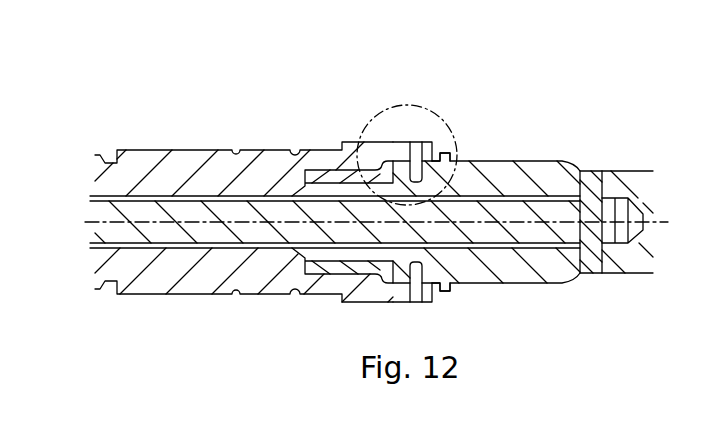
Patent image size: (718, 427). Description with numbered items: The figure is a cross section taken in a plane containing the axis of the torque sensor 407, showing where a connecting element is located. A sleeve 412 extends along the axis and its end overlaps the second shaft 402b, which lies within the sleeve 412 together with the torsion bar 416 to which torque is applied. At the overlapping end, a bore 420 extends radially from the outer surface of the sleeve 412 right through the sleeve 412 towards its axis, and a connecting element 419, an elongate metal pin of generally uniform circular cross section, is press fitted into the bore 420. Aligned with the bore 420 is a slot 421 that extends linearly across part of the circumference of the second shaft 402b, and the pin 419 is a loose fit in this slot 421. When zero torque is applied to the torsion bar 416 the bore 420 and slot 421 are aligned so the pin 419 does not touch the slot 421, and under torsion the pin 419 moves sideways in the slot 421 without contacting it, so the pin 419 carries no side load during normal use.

The torque sensor 407 is at (125, 141).
The sleeve 412 is at (262, 163).
The torsion bar 416 is at (223, 226).
The second shaft 402b is at (503, 270).
The connecting element 419 is at (420, 147).
The bore 420 is at (433, 163).
The slot 421 is at (447, 165).